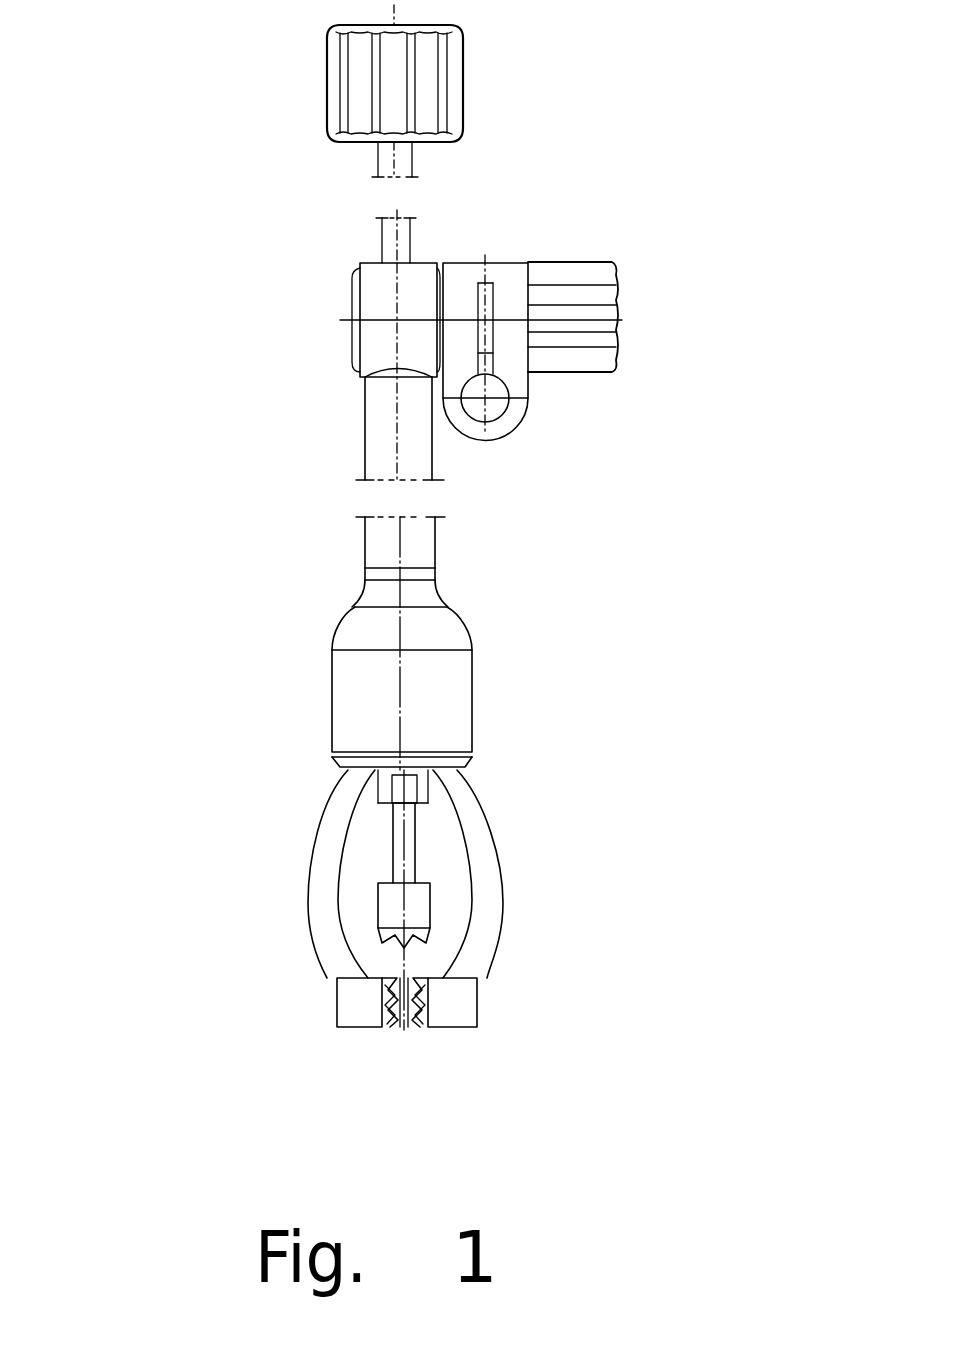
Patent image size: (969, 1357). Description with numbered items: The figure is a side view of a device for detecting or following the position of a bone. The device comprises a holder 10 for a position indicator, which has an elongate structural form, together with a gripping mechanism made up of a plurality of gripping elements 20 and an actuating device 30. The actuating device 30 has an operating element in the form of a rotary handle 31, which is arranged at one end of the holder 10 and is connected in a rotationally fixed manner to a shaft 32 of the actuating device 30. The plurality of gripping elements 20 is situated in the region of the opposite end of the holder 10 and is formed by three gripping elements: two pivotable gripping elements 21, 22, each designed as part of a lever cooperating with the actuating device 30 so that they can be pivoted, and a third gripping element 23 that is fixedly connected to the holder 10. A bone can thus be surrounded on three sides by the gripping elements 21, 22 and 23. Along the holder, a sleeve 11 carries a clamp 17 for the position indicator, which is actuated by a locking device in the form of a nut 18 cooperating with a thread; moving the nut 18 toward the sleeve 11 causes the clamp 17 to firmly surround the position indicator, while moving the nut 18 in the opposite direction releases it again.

The holder 10 is at (478, 465).
The sleeve 11 is at (363, 427).
The clamp 17 is at (513, 415).
The nut 18 is at (572, 277).
The plurality of gripping elements 20 is at (290, 876).
The pivotable gripping element 21 is at (338, 960).
The pivotable gripping element 22 is at (475, 953).
The third gripping element 23 is at (405, 834).
The actuating device 30 is at (312, 185).
The rotary handle 31 is at (453, 94).
The shaft 32 is at (403, 235).